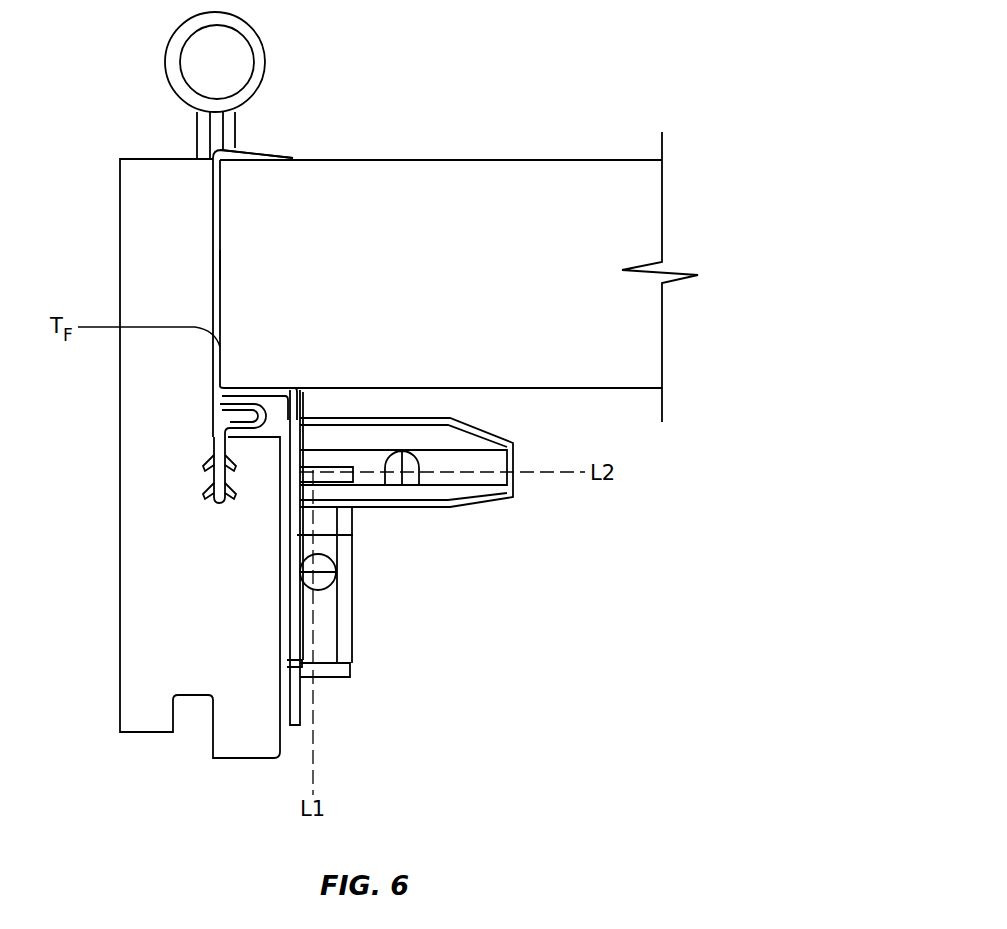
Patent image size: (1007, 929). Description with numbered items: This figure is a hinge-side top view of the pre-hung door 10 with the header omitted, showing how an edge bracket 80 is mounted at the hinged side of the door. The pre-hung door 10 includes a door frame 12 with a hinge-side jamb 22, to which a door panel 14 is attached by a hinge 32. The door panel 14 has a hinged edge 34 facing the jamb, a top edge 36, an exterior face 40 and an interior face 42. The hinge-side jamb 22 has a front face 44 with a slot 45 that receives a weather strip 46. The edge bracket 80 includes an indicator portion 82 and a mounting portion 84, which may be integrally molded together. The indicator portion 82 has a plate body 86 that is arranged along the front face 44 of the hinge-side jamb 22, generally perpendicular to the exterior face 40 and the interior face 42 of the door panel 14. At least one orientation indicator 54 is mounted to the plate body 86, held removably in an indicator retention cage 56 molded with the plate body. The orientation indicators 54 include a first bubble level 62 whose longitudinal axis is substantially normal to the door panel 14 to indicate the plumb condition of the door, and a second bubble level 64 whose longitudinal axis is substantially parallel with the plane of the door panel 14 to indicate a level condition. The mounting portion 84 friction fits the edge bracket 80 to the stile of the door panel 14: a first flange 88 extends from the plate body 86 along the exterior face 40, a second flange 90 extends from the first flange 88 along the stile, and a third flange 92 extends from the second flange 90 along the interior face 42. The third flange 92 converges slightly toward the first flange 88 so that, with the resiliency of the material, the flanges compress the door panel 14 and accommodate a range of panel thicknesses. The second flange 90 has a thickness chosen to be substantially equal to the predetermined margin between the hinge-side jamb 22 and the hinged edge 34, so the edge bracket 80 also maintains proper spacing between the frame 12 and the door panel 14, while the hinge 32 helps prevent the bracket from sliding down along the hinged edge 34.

The pre-hung door 10 is at (585, 68).
The door frame 12 is at (160, 298).
The door panel 14 is at (522, 208).
The hinge-side jamb 22 is at (160, 657).
The hinge 32 is at (208, 57).
The hinged edge 34 is at (223, 265).
The top edge 36 is at (437, 281).
The exterior face 40 is at (630, 390).
The interior face 42 is at (435, 160).
The front face 44 is at (213, 417).
The slot 45 is at (222, 495).
The weather strip 46 is at (212, 442).
The orientation indicator 54 is at (495, 462).
The indicator retention cage 56 is at (470, 438).
The first bubble level 62 is at (325, 617).
The second bubble level 64 is at (462, 462).
The edge bracket 80 is at (440, 617).
The indicator portion 82 is at (302, 712).
The mounting portion 84 is at (216, 152).
The plate body 86 is at (300, 540).
The first flange 88 is at (262, 387).
The second flange 90 is at (213, 285).
The third flange 92 is at (252, 148).